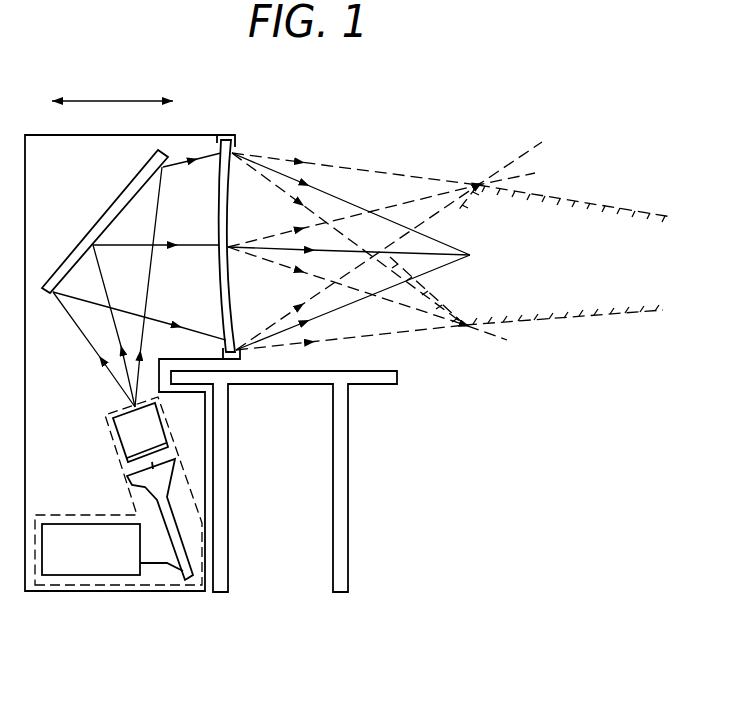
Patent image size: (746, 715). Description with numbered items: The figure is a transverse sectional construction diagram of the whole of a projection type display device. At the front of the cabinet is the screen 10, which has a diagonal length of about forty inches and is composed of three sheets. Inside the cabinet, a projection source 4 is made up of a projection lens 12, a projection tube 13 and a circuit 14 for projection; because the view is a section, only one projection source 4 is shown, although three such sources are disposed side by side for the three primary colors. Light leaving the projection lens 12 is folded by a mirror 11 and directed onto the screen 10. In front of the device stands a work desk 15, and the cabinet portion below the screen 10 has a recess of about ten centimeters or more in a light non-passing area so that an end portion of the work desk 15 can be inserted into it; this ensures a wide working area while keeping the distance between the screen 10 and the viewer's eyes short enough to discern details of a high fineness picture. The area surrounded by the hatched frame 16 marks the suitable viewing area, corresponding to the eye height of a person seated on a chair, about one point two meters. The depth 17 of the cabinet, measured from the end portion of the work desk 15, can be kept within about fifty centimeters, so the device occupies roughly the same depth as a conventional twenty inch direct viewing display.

The projection source 4 is at (139, 586).
The screen 10 is at (218, 203).
The mirror 11 is at (118, 198).
The projection lens 12 is at (125, 436).
The projection tube 13 is at (148, 481).
The circuit for projection 14 is at (60, 524).
The work desk 15 is at (282, 392).
The hatched frame 16 is at (365, 251).
The depth of the cabinet 17 is at (112, 88).